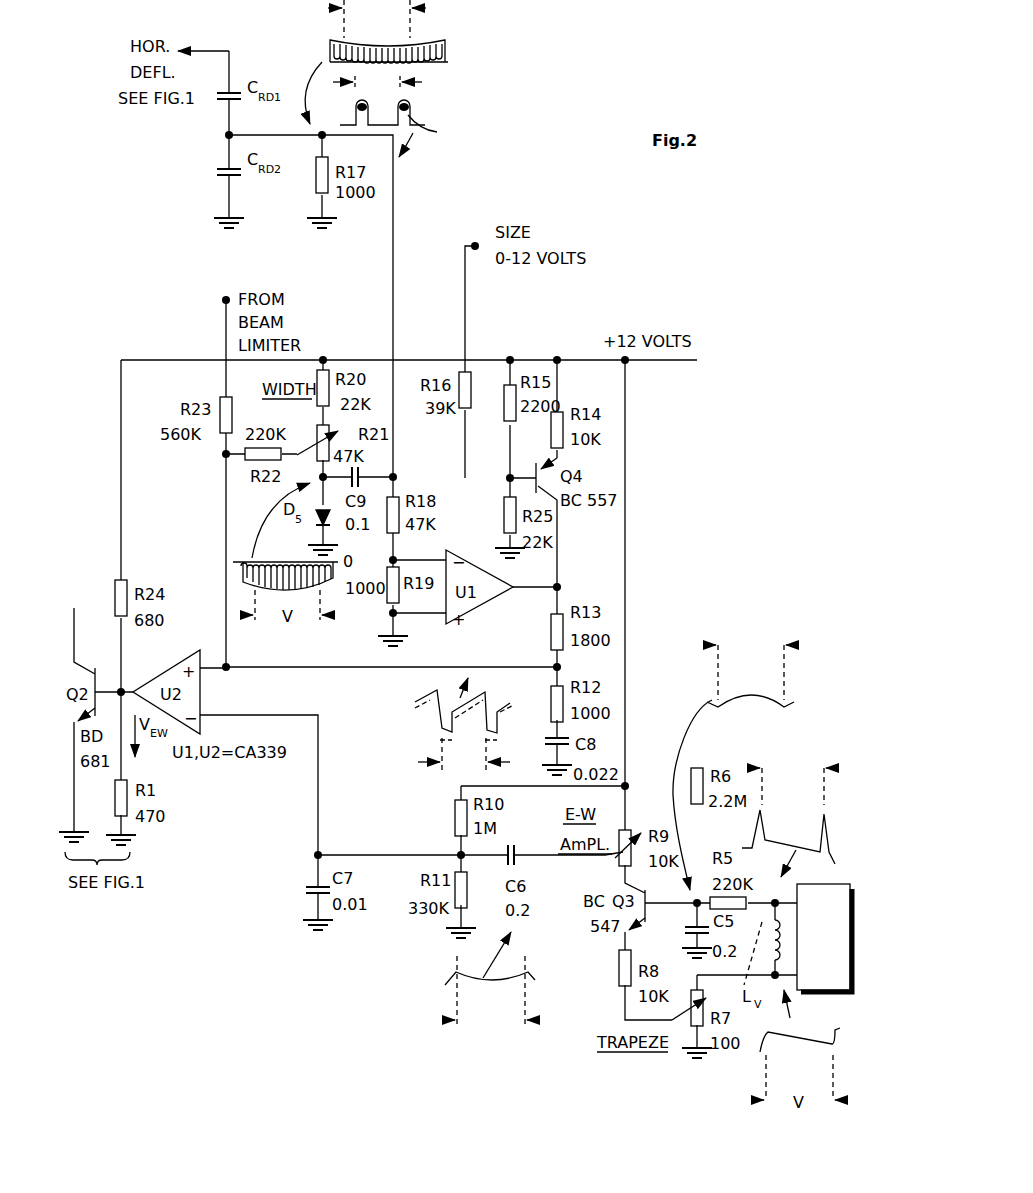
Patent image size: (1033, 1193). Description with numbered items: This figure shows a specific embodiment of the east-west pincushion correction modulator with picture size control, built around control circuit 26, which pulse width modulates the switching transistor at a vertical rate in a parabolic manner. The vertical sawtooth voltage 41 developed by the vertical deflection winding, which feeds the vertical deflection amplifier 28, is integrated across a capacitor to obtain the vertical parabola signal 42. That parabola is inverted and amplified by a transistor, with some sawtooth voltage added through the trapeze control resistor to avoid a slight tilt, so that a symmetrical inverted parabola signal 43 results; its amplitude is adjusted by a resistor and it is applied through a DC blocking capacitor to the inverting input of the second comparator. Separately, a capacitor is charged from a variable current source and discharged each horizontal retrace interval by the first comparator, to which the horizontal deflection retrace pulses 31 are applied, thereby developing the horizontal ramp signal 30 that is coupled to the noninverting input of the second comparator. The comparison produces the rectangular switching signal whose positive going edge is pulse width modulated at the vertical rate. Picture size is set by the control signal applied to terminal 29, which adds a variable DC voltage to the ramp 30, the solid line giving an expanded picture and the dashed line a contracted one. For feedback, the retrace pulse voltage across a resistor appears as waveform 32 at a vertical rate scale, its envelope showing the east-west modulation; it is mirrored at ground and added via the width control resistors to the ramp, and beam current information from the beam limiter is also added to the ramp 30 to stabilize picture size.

The control circuit 26 is at (515, 336).
The vertical deflection amplifier 28 is at (845, 882).
The terminal 29 is at (476, 243).
The horizontal ramp signal 30 is at (438, 729).
The horizontal deflection retrace pulses 31 is at (415, 108).
The waveform 32 is at (424, 40).
The vertical sawtooth voltage 41 is at (754, 837).
The vertical parabola signal 42 is at (750, 689).
The parabola signal 43 is at (452, 975).